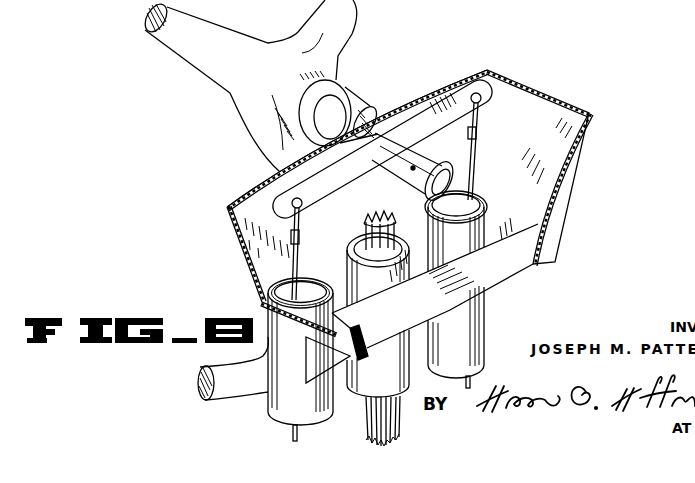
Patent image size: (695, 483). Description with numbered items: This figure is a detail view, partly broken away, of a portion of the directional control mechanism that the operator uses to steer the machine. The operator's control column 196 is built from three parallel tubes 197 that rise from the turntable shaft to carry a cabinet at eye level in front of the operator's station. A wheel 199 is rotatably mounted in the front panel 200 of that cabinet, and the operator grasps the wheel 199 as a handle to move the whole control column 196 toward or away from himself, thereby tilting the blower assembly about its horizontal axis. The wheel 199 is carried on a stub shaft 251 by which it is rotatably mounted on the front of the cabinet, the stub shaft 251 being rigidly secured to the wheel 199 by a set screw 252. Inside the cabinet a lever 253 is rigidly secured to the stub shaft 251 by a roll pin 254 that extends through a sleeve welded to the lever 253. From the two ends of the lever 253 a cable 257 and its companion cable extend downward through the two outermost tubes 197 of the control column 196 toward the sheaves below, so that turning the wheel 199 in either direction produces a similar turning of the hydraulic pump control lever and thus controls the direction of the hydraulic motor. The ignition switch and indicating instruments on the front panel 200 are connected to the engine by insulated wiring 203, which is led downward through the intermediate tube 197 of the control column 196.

The control column 196 is at (577, 95).
The tubes 197 is at (293, 402).
The wheel 199 is at (228, 70).
The front panel 200 is at (262, 188).
The insulated wiring 203 is at (378, 224).
The stub shaft 251 is at (476, 160).
The set screw 252 is at (297, 103).
The lever 253 is at (447, 113).
The roll pin 254 is at (387, 176).
The cable 257 is at (495, 206).